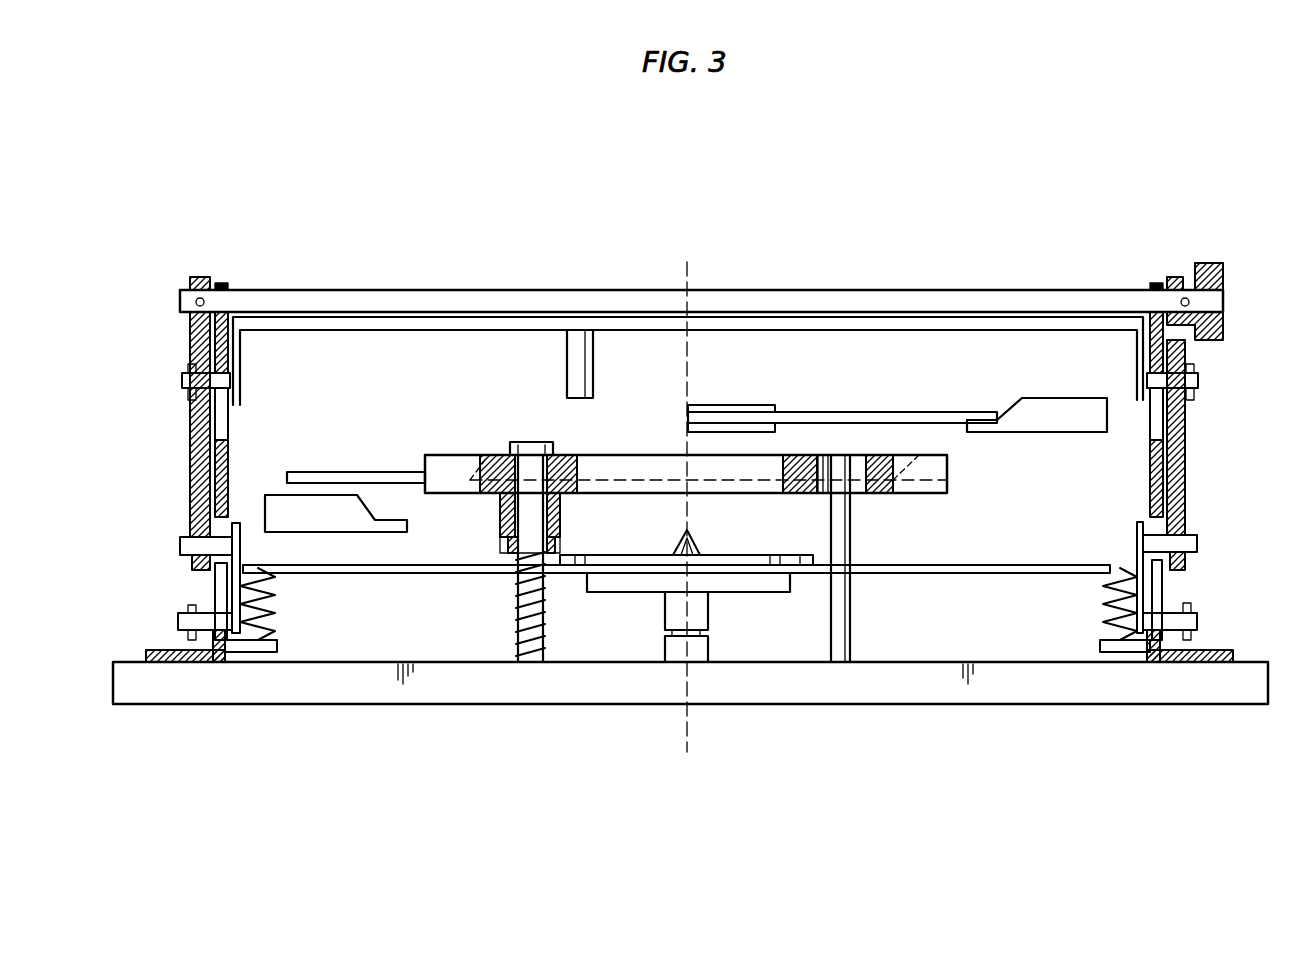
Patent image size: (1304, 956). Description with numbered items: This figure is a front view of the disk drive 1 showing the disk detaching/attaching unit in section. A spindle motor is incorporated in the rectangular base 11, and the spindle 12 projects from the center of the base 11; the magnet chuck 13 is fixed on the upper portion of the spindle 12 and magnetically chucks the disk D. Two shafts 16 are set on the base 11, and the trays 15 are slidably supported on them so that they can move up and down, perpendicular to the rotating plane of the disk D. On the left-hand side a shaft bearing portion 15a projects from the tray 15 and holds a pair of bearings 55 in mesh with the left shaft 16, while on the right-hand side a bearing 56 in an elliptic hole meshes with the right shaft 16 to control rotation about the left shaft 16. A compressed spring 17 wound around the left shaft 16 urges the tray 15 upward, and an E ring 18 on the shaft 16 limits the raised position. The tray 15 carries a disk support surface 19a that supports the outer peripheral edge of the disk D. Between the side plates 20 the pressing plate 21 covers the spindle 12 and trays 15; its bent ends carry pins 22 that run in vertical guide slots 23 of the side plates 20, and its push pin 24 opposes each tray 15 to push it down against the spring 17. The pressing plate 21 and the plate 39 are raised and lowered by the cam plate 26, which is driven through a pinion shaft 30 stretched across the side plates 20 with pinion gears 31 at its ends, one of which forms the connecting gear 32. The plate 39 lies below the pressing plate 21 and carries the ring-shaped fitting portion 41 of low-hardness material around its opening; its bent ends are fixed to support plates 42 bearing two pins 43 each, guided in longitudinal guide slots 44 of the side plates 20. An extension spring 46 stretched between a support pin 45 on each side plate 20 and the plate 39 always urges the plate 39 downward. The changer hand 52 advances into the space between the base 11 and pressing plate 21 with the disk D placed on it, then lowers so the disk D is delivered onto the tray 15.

The disk drive 1 is at (622, 196).
The base 11 is at (366, 705).
The spindle 12 is at (705, 540).
The magnet chuck 13 is at (780, 592).
The tray 15 is at (947, 478).
The shaft bearing portion 15a is at (500, 518).
The shaft 16 is at (518, 590).
The compressed spring 17 is at (516, 618).
The E ring 18 is at (520, 442).
The disk support surface 19a is at (590, 478).
The side plate 20 is at (221, 283).
The pressing plate 21 is at (400, 318).
The pin 22 is at (182, 382).
The guide slot 23 is at (221, 432).
The push pin 24 is at (572, 378).
The cam plate 26 is at (190, 478).
The pinion shaft 30 is at (797, 300).
The pinion gear 31 is at (200, 277).
The connecting gear 32 is at (1205, 263).
The plate 39 is at (882, 572).
The fitting portion 41 is at (750, 555).
The support plate 42 is at (240, 546).
The pin 43 is at (180, 546).
The guide slot 44 is at (215, 584).
The support pin 45 is at (262, 645).
The extension spring 46 is at (270, 605).
The changer hand 52 is at (340, 530).
The bearing 55 is at (562, 456).
The bearing 56 is at (857, 456).
The disk D is at (318, 472).